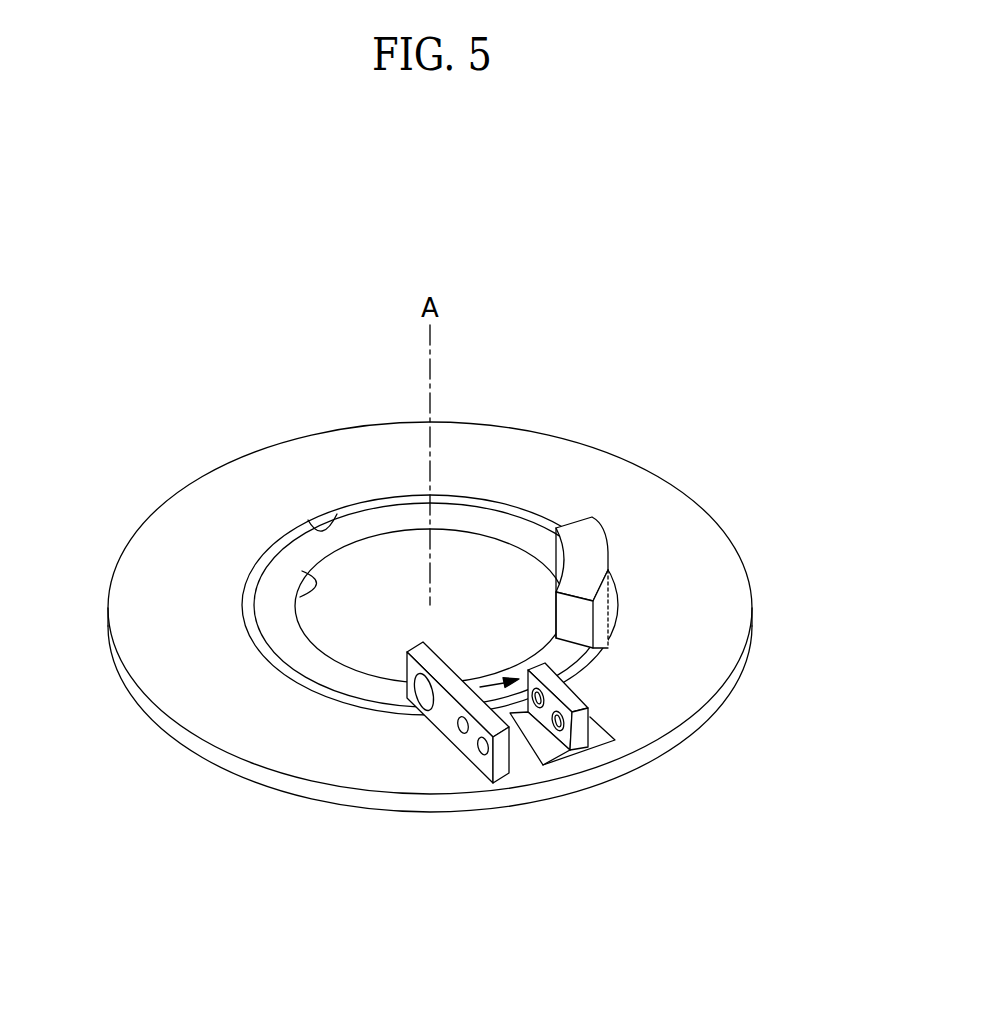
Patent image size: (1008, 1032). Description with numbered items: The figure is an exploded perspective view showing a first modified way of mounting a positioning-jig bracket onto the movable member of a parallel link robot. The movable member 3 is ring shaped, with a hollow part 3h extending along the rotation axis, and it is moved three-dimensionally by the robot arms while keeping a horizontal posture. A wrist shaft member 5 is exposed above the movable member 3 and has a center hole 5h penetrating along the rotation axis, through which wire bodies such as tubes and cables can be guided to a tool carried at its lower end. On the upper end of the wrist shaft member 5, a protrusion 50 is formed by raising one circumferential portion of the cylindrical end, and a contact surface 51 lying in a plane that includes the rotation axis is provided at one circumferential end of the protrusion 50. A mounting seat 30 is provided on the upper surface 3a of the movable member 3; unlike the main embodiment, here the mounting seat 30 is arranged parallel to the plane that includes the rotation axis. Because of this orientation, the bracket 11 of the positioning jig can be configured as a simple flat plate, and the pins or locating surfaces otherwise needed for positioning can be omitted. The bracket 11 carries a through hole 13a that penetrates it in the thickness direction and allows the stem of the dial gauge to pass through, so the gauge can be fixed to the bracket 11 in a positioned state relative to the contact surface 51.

The movable member 3 is at (755, 612).
The upper surface 3a is at (208, 706).
The hollow part 3h is at (340, 516).
The wrist shaft member 5 is at (465, 518).
The center hole 5h is at (302, 594).
The bracket 11 is at (374, 750).
The through hole 13a is at (425, 689).
The mounting seat 30 is at (548, 712).
The protrusion 50 is at (607, 566).
The contact surface 51 is at (568, 606).